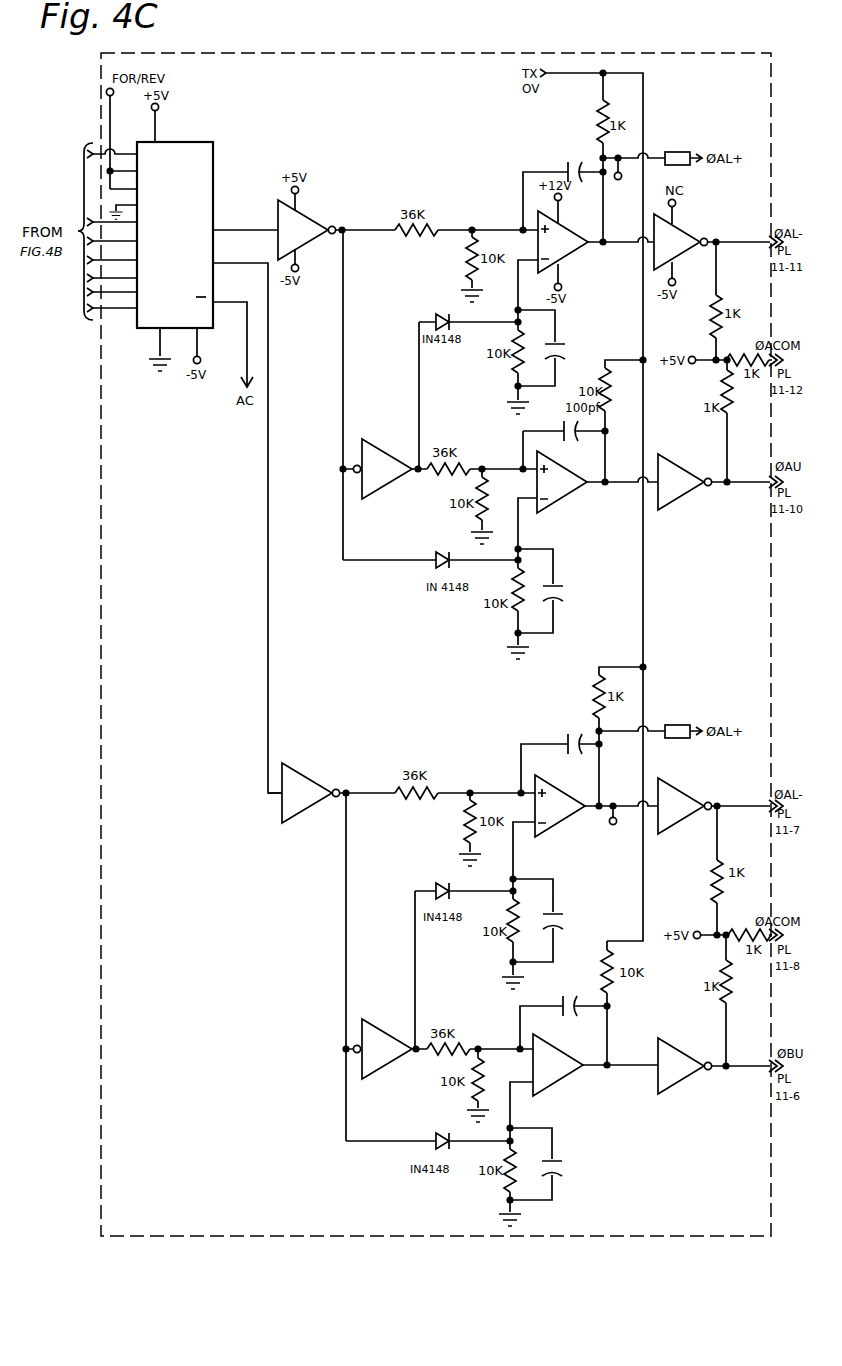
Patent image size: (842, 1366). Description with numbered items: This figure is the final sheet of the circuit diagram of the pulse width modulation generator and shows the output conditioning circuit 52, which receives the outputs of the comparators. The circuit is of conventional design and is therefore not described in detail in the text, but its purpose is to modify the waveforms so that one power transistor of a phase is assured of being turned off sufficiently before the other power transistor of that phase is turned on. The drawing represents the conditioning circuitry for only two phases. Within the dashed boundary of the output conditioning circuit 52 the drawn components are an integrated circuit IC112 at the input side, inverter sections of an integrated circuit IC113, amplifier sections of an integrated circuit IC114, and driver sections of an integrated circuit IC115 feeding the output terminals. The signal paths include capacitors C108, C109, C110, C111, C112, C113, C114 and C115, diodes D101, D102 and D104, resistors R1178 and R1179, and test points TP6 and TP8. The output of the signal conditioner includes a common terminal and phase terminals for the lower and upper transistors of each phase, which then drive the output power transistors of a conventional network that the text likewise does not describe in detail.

The output conditioning circuit 52 is at (426, 95).
The CD4023 analog multiplexer IC112 is at (175, 230).
The hex inverter IC113 is at (345, 631).
The quad operational amplifier IC114 is at (568, 648).
The inverter driver IC115 is at (689, 648).
The 100pf capacitor C108 is at (563, 158).
The .001 capacitor C109 is at (572, 340).
The 100pf capacitor C110 is at (581, 440).
The .001 capacitor C111 is at (573, 593).
The 100pf capacitor C112 is at (566, 725).
The .001 capacitor C113 is at (573, 921).
The 100pf capacitor C114 is at (571, 988).
The .001 capacitor C115 is at (572, 1168).
The 1N4148 diode D101 is at (439, 311).
The 1N4148 diode D102 is at (438, 714).
The 1N4148 diode D104 is at (439, 1129).
The 220K resistor R1178 is at (675, 140).
The 220K resistor R1179 is at (672, 714).
The test point 6 TP6 is at (616, 185).
The test point 8 TP8 is at (610, 829).